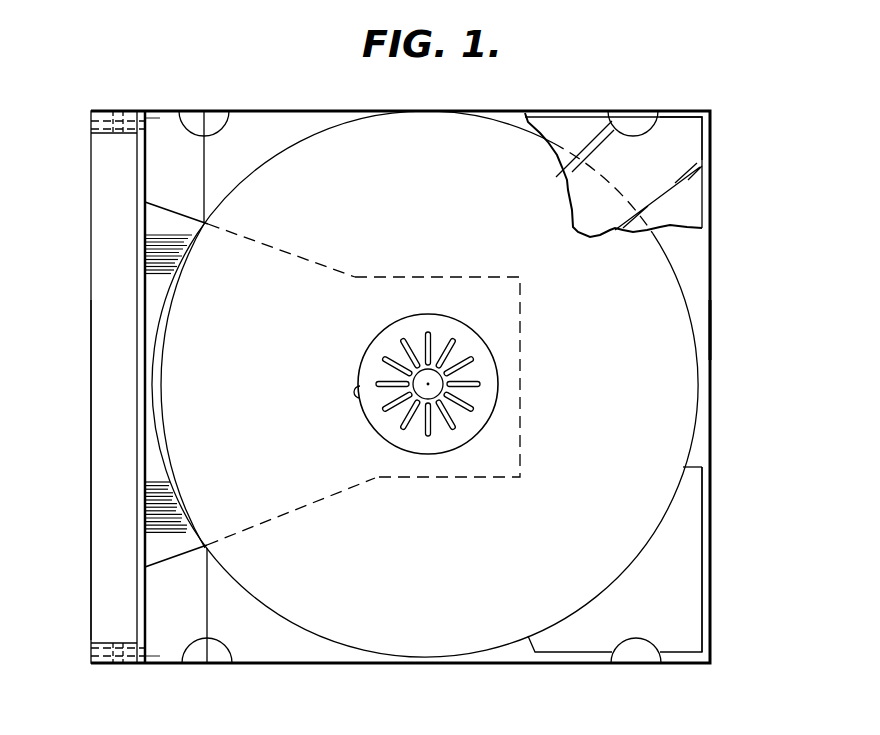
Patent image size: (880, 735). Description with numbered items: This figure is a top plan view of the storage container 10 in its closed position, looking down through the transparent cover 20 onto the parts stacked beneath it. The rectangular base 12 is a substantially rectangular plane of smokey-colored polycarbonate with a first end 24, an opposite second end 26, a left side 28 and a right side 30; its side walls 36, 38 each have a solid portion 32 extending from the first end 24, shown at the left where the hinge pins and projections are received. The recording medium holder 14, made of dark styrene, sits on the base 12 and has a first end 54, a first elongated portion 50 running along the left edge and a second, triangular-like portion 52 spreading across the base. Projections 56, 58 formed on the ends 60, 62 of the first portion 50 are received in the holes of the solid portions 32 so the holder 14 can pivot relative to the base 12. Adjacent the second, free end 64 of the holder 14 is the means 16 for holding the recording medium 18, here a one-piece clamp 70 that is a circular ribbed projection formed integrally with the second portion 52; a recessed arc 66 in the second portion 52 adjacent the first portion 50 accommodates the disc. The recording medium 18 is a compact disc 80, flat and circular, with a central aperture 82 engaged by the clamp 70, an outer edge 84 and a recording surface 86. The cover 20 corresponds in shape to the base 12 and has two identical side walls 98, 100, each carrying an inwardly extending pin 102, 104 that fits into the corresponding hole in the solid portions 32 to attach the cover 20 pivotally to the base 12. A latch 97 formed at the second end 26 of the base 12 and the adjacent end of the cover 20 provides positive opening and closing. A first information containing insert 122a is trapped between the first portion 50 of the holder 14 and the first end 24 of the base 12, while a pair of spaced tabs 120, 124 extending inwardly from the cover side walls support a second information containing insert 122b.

The storage container 10 is at (773, 181).
The rectangular base 12 is at (700, 440).
The recording medium holder 14 is at (353, 484).
The means for holding a recording medium 16 is at (498, 413).
The recording medium 18 is at (327, 637).
The cover 20 is at (685, 610).
The first end of base 24 is at (91, 460).
The second end of base 26 is at (713, 383).
The left side of base 28 is at (490, 664).
The right side of base 30 is at (537, 110).
The solid portion 32 is at (151, 132).
The side wall of base 36 is at (408, 663).
The side wall of base 38 is at (340, 110).
The first elongated portion 50 is at (113, 540).
The second triangular-like portion 52 is at (265, 290).
The first end of holder 54 is at (91, 385).
The projection 56 is at (116, 643).
The projection 58 is at (118, 134).
The end of first portion 60 is at (88, 637).
The end of first portion 62 is at (91, 130).
The second free end of holder 64 is at (525, 315).
The recessed arc 66 is at (210, 223).
The one-piece clamp 70 is at (488, 372).
The compact disc 80 is at (679, 497).
The circular central aperture 82 is at (362, 398).
The edge of disc 84 is at (672, 264).
The recording surface 86 is at (633, 517).
The latch 97 is at (711, 339).
The side wall of cover 98 is at (98, 664).
The side wall of cover 100 is at (100, 110).
The pin 102 is at (117, 663).
The pin 104 is at (128, 110).
The tab 120 is at (637, 647).
The first information containing insert 122a is at (685, 590).
The second information containing insert 122b is at (678, 136).
The tab 124 is at (194, 125).